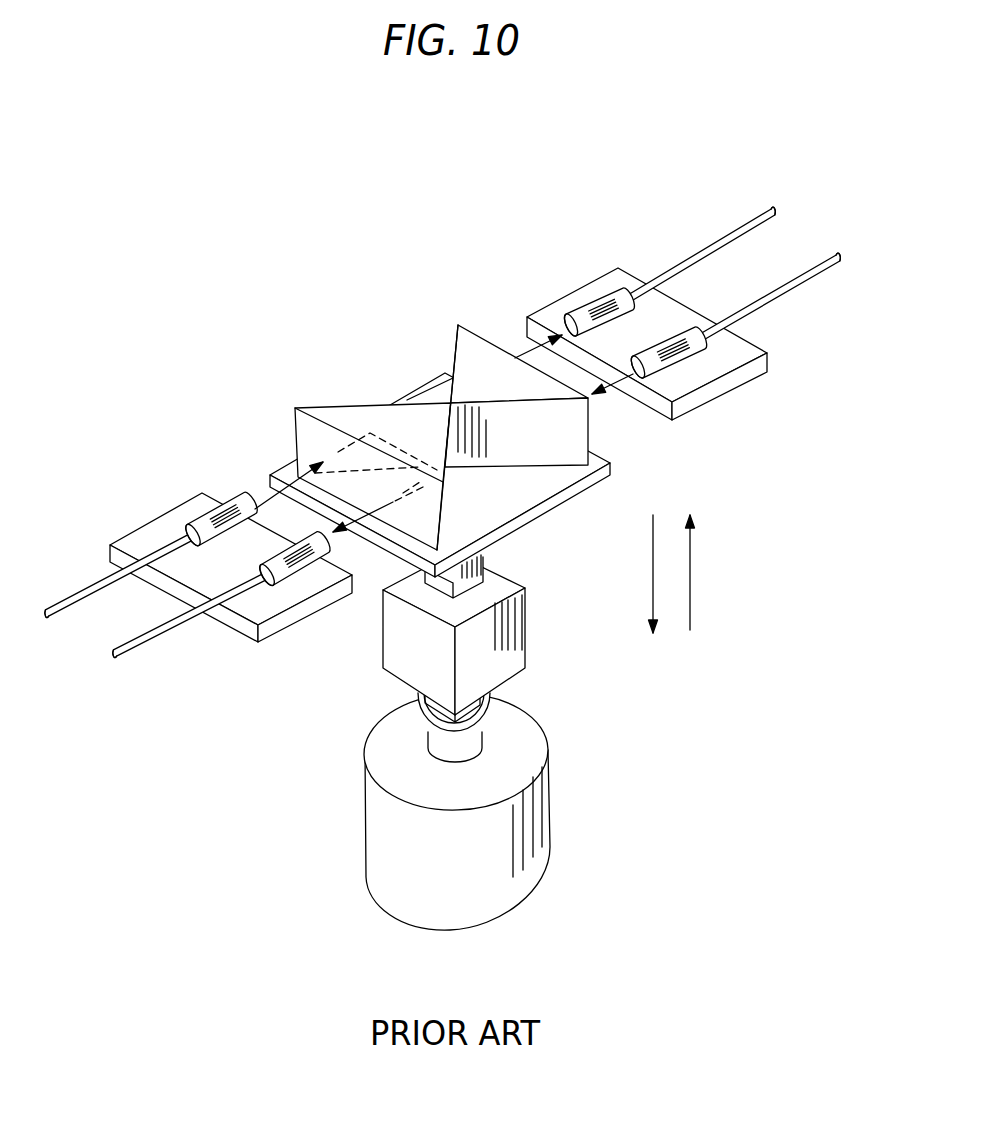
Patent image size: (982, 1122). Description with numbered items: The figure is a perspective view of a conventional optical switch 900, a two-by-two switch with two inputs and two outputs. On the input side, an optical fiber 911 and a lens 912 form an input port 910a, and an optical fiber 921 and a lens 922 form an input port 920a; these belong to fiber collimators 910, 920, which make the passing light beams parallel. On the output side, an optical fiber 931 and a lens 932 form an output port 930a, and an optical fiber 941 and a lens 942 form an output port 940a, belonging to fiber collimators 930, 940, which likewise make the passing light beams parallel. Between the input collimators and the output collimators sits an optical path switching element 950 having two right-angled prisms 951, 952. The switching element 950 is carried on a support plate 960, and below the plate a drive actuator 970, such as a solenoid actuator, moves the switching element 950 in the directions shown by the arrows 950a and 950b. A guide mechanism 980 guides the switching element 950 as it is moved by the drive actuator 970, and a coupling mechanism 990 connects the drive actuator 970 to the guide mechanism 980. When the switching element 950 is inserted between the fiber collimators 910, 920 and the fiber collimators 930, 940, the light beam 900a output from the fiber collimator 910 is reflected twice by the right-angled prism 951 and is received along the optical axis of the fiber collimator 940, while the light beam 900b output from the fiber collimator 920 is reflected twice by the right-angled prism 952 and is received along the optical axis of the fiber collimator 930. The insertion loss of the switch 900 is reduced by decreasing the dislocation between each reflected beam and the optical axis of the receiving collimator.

The optical switch 900 is at (397, 235).
The light beam 900a is at (347, 532).
The light beam 900b is at (527, 357).
The fiber collimator 910 is at (150, 462).
The input port 910a is at (43, 617).
The optical fiber 911 is at (90, 587).
The lens 912 is at (232, 500).
The fiber collimator 920 is at (738, 413).
The input port 920a is at (838, 258).
The optical fiber 921 is at (793, 293).
The lens 922 is at (702, 352).
The fiber collimator 930 is at (625, 250).
The output port 930a is at (775, 210).
The optical fiber 931 is at (712, 247).
The lens 932 is at (592, 308).
The fiber collimator 940 is at (230, 662).
The output port 940a is at (118, 655).
The optical fiber 941 is at (158, 633).
The lens 942 is at (287, 575).
The optical path switching element 950 is at (377, 313).
The arrow 950a is at (654, 597).
The arrow 950b is at (690, 588).
The right-angled prism 951 is at (347, 413).
The right-angled prism 952 is at (480, 343).
The support plate 960 is at (573, 500).
The drive actuator 970 is at (545, 802).
The guide mechanism 980 is at (520, 658).
The coupling mechanism 990 is at (493, 703).